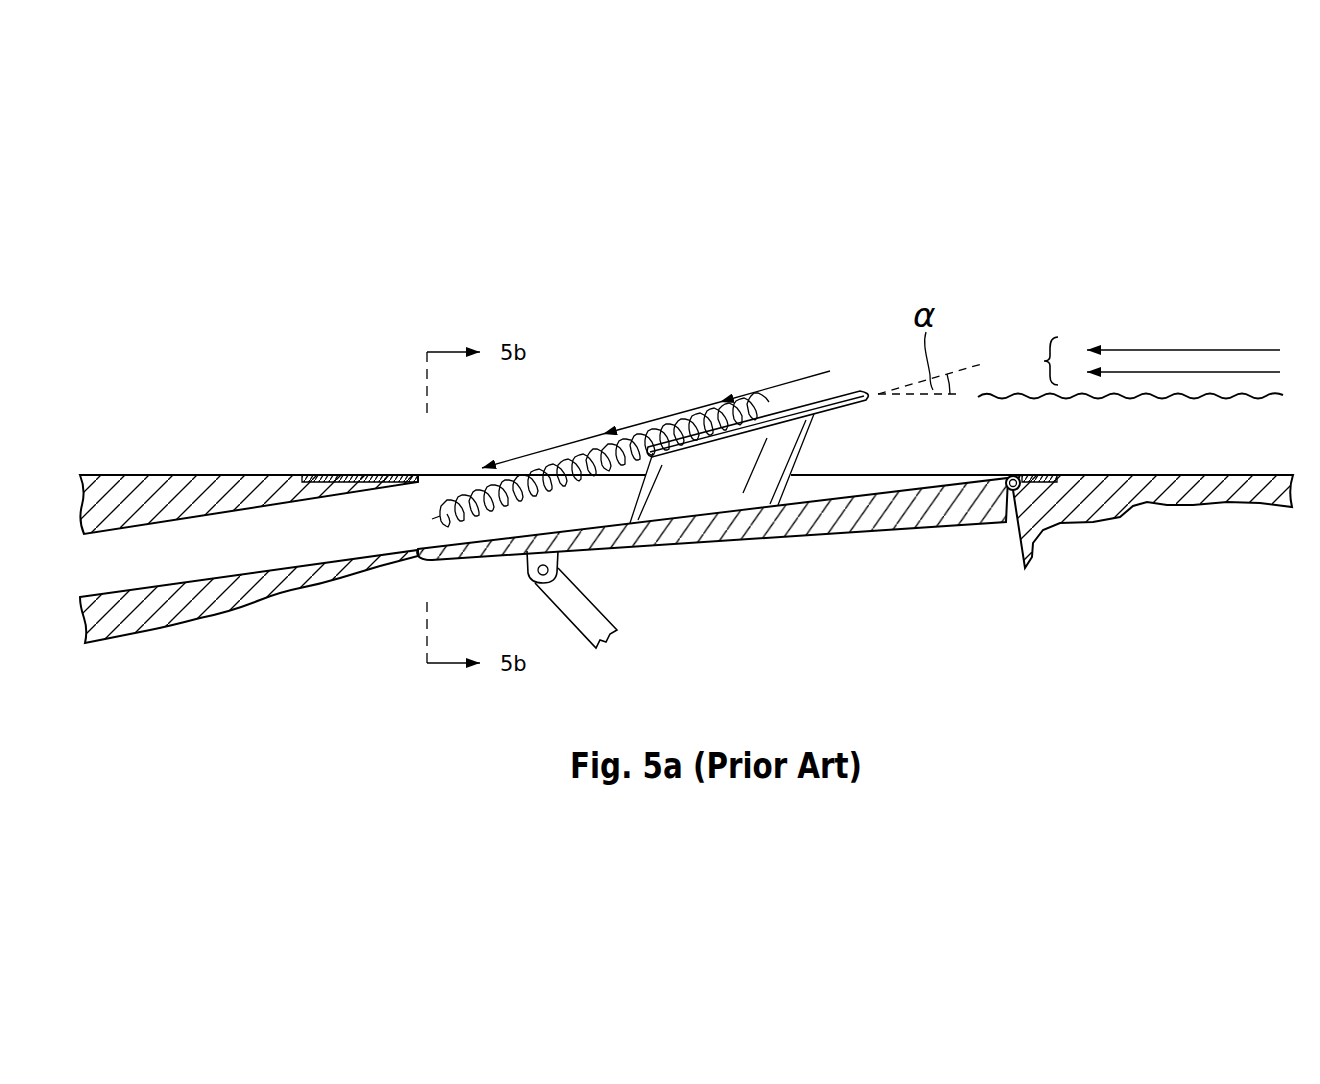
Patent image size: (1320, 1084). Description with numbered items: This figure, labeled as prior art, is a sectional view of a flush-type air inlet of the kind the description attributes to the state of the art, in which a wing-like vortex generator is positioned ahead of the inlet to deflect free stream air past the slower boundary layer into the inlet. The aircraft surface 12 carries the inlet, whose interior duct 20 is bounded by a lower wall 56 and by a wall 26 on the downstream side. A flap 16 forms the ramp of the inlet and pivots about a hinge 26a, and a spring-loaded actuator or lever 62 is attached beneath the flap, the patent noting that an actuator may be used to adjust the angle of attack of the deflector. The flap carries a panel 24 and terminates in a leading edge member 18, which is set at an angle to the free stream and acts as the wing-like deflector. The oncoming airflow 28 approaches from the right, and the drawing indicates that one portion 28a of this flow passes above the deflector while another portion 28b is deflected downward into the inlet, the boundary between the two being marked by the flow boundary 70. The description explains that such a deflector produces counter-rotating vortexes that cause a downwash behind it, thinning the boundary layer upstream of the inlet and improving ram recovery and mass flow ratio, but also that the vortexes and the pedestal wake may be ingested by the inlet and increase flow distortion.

The aircraft skin / wall 12 is at (1229, 474).
The flap 16 is at (877, 522).
The flap edge member 18 is at (861, 392).
The duct 20 is at (236, 557).
The flap panel 24 is at (700, 490).
The wall 26 is at (1155, 474).
The flap hinge 26a is at (505, 545).
The airflow 28 is at (1160, 347).
The airflow portion 28a is at (1027, 360).
The airflow portion 28b is at (1007, 435).
The lower duct wall 56 is at (276, 570).
The actuator lever 62 is at (587, 611).
The flow boundary 70 is at (1000, 393).